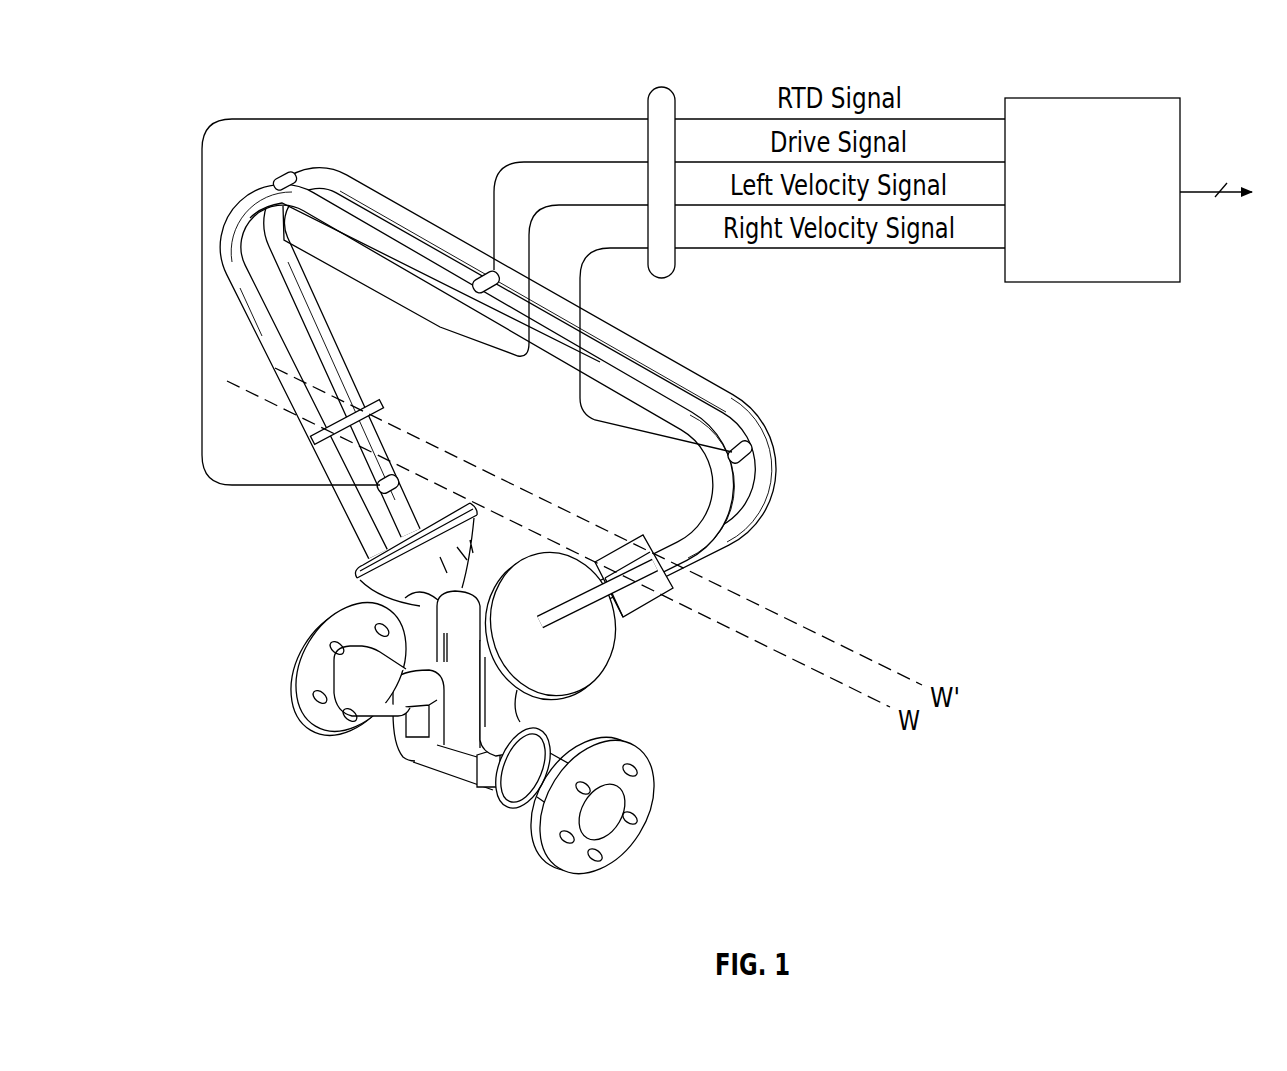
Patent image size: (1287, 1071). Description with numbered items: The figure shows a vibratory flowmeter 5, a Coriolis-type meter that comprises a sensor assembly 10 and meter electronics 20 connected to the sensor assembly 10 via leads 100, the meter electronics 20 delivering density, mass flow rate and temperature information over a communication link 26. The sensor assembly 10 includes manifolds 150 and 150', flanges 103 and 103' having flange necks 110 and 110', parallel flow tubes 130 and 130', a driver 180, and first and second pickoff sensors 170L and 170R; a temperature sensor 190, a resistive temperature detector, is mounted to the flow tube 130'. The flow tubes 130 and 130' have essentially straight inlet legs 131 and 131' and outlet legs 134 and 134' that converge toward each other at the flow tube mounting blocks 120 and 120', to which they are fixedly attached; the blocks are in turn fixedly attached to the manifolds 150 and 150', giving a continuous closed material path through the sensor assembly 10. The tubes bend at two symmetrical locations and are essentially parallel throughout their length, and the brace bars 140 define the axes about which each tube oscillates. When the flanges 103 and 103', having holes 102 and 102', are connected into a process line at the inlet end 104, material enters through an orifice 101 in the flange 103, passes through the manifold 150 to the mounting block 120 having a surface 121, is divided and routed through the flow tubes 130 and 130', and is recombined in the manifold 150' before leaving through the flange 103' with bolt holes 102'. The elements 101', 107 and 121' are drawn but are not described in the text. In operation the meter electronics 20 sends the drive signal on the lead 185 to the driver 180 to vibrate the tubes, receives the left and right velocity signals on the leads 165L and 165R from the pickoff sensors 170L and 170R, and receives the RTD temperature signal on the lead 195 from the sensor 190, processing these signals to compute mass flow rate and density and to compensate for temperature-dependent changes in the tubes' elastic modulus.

The vibratory flowmeter 5 is at (1108, 542).
The sensor assembly 10 is at (688, 637).
The meter electronics 20 is at (1124, 97).
The communication link 26 is at (1202, 191).
The leads 100 is at (648, 112).
The orifice 101 is at (321, 667).
The outlet flange 101' is at (613, 806).
The holes 102 is at (315, 711).
The bolt holes 102' is at (646, 797).
The flange 103 is at (345, 659).
The flange 103' is at (608, 803).
The inlet end 104 is at (286, 673).
The spacer 107 is at (525, 497).
The flange neck 110 is at (352, 719).
The flange neck 110' is at (530, 801).
The flow tube mounting block 120 is at (396, 538).
The flow tube mounting block 120' is at (581, 628).
The surface 121 is at (432, 512).
The outlet tube stub 121' is at (591, 561).
The flow tube 130 is at (477, 407).
The flow tube 130' is at (520, 385).
The inlet leg 131 is at (201, 272).
The inlet leg 131' is at (354, 381).
The outlet leg 134 is at (689, 486).
The outlet leg 134' is at (786, 470).
The brace bar 140 is at (312, 442).
The manifold 150 is at (446, 712).
The manifold 150' is at (540, 698).
The lead 165L is at (960, 204).
The lead 165R is at (980, 250).
The pickoff sensor 170L is at (288, 178).
The pickoff sensor 170R is at (755, 452).
The driver 180 is at (488, 270).
The lead 185 is at (710, 160).
The temperature sensor 190 is at (400, 470).
The lead 195 is at (676, 108).